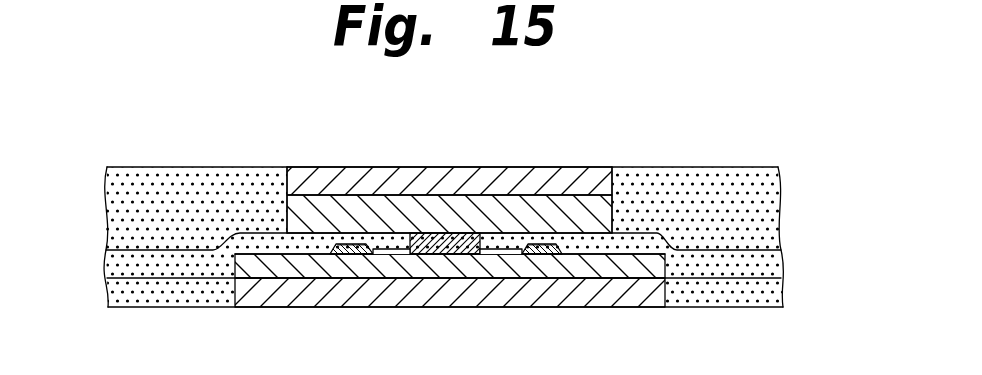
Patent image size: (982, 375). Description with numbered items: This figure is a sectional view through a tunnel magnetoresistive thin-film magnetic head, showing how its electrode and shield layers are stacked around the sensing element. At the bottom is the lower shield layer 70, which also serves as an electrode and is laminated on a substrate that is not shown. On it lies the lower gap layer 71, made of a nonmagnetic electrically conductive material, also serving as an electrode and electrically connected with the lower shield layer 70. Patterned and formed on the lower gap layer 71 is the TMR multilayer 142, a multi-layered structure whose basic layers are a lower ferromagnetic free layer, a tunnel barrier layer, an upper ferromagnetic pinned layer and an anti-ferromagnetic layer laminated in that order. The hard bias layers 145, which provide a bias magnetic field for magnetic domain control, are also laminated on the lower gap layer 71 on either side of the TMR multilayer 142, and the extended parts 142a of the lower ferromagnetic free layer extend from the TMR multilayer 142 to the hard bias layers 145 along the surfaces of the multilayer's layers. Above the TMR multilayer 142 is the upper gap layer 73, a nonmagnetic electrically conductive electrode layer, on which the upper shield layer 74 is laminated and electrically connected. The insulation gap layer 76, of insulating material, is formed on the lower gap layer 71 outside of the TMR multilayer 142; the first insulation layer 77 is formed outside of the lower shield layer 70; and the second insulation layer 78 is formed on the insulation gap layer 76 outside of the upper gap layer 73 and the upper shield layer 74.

The lower shield layer 70 is at (650, 300).
The lower gap layer 71 is at (575, 268).
The upper gap layer 73 is at (448, 213).
The upper shield layer 74 is at (408, 182).
The insulation gap layer 76 is at (120, 257).
The first insulation layer 77 is at (112, 288).
The second insulation layer 78 is at (120, 207).
The TMR multilayer 142 is at (450, 240).
The extended parts of the lower ferromagnetic thin-film layer 142a is at (378, 255).
The hard bias layers 145 is at (350, 245).